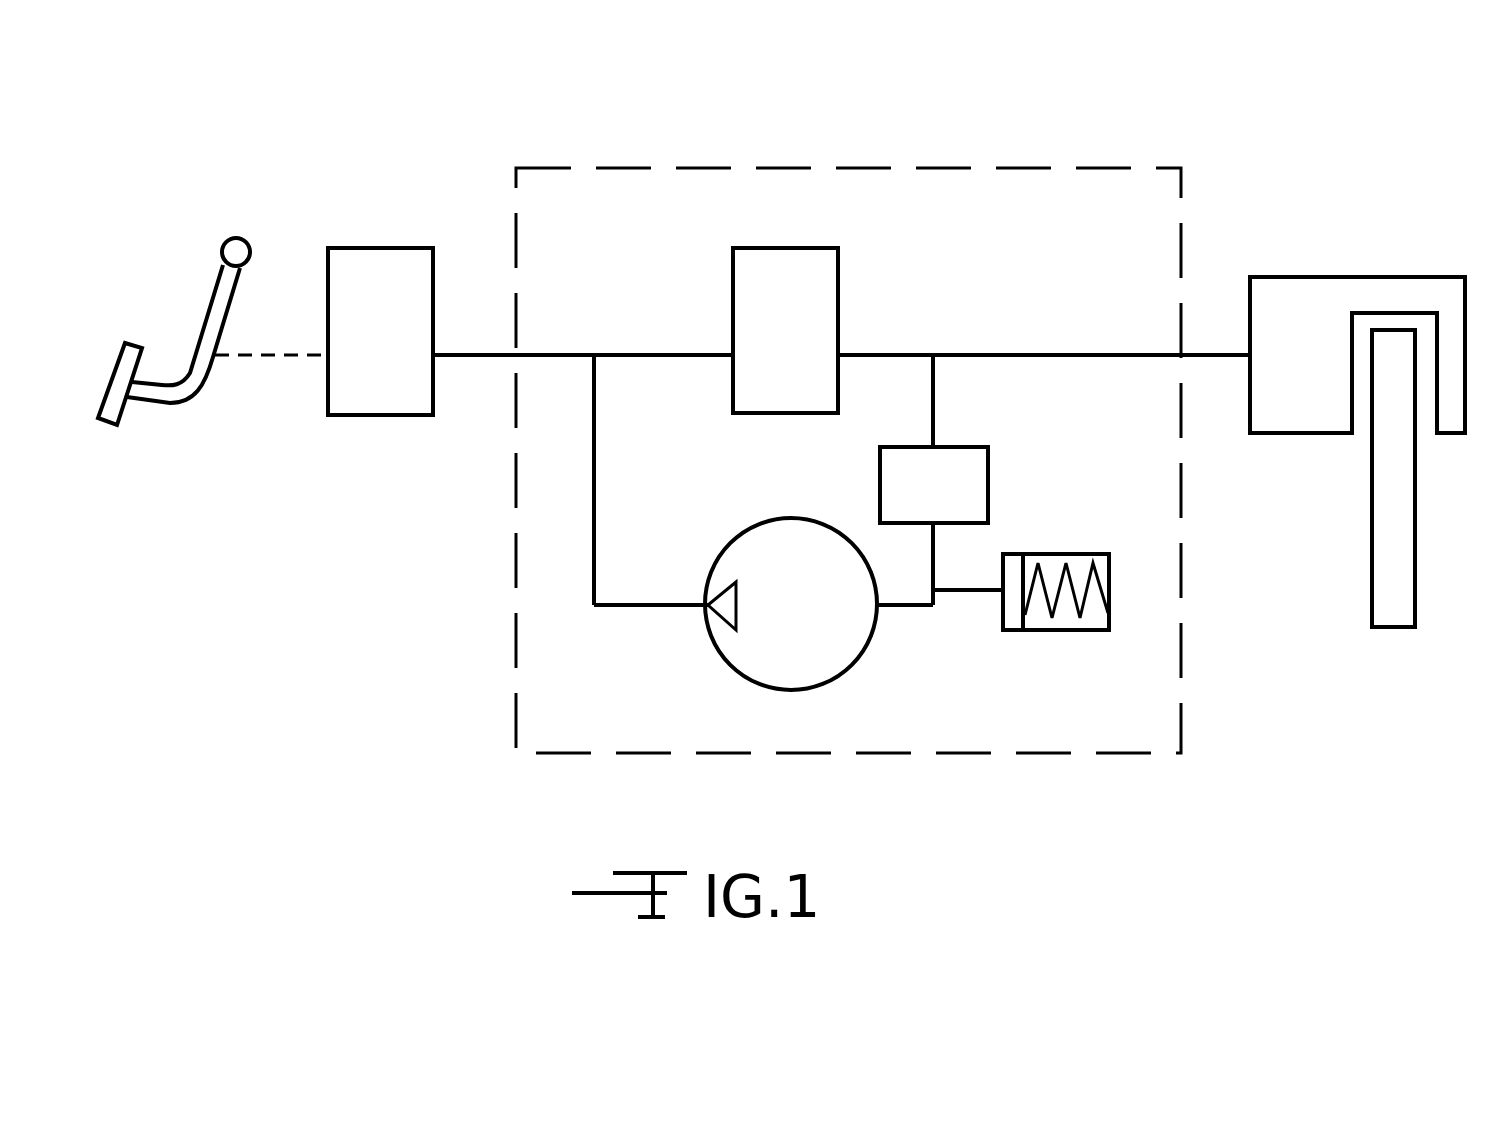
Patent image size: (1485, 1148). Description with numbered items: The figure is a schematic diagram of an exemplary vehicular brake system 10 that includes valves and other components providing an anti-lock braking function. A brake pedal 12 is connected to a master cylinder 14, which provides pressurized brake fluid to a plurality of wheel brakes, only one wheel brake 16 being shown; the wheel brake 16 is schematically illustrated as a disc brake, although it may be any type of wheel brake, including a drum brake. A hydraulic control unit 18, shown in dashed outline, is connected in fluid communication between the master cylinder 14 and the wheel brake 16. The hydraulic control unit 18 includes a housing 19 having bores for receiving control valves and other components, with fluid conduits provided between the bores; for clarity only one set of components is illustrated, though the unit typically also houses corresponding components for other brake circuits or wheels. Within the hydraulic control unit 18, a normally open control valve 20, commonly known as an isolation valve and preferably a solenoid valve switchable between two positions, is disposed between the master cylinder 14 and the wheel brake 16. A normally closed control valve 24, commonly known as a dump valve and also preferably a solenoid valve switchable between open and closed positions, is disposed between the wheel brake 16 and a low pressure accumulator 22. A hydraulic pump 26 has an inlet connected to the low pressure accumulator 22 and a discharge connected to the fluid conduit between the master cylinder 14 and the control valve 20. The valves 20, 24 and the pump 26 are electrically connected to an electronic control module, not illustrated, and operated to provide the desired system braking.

The brake system 10 is at (1117, 134).
The brake pedal 12 is at (123, 417).
The master cylinder 14 is at (358, 248).
The wheel brake 16 is at (1387, 277).
The hydraulic control unit 18 is at (575, 757).
The housing 19 is at (758, 198).
The normally open control valve 20 is at (838, 290).
The low pressure accumulator 22 is at (1108, 608).
The normally closed control valve 24 is at (988, 480).
The hydraulic pump 26 is at (865, 643).